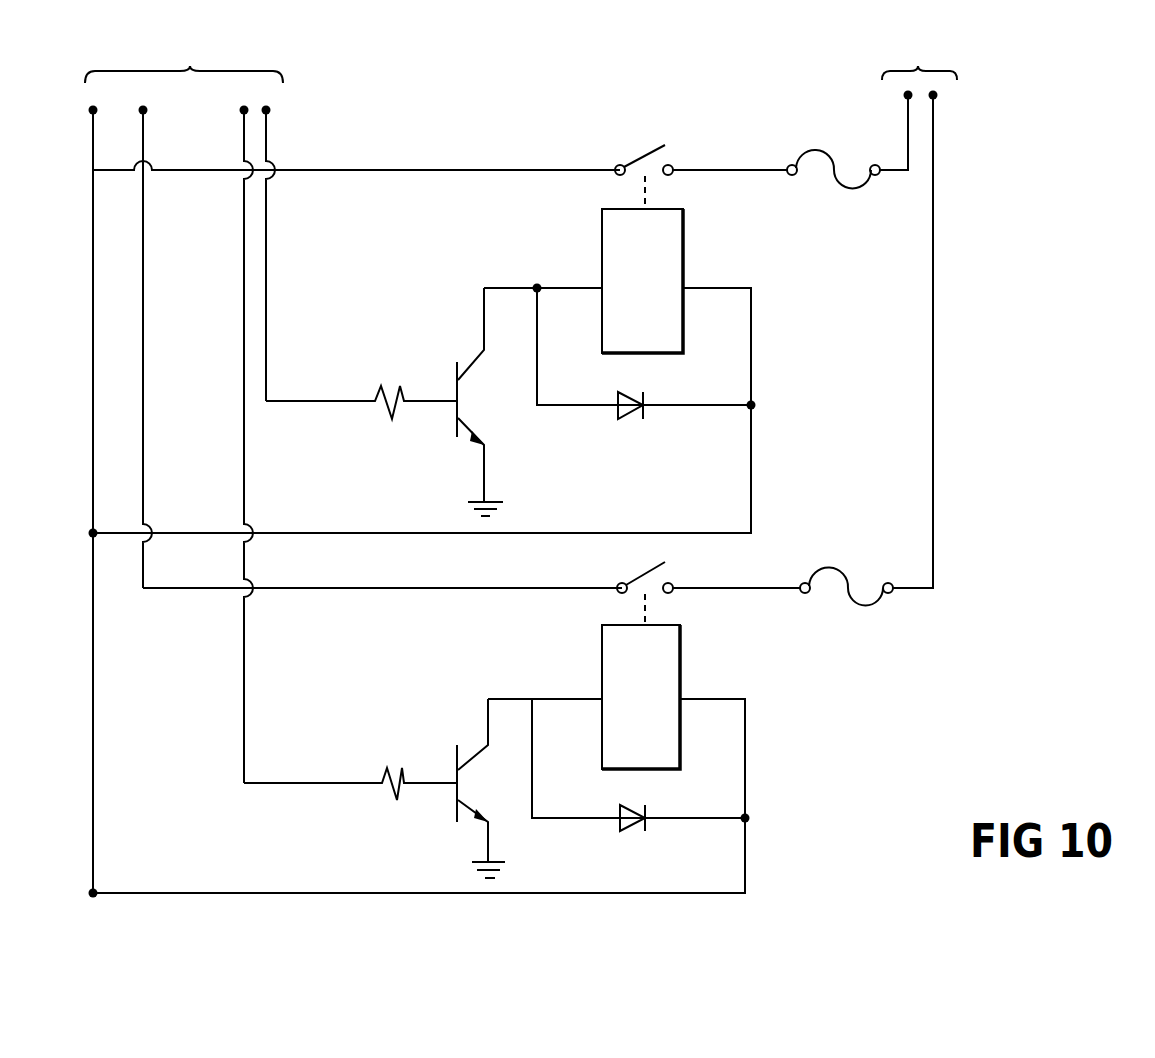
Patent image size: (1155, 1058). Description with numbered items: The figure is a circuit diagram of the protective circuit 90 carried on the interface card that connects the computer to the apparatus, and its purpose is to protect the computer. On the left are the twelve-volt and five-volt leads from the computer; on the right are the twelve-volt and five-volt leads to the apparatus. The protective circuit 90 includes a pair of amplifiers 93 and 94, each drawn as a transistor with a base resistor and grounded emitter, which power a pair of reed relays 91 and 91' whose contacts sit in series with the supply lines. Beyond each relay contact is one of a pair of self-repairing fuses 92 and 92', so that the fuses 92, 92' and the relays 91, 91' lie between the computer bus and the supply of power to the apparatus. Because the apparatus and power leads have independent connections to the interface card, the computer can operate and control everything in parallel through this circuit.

The protective circuit 90 is at (856, 676).
The reed relay 91 is at (692, 149).
The reed relay 91' is at (696, 571).
The self-repairing fuse 92 is at (818, 157).
The self-repairing fuse 92' is at (846, 566).
The amplifier 93 is at (422, 366).
The amplifier 94 is at (419, 740).